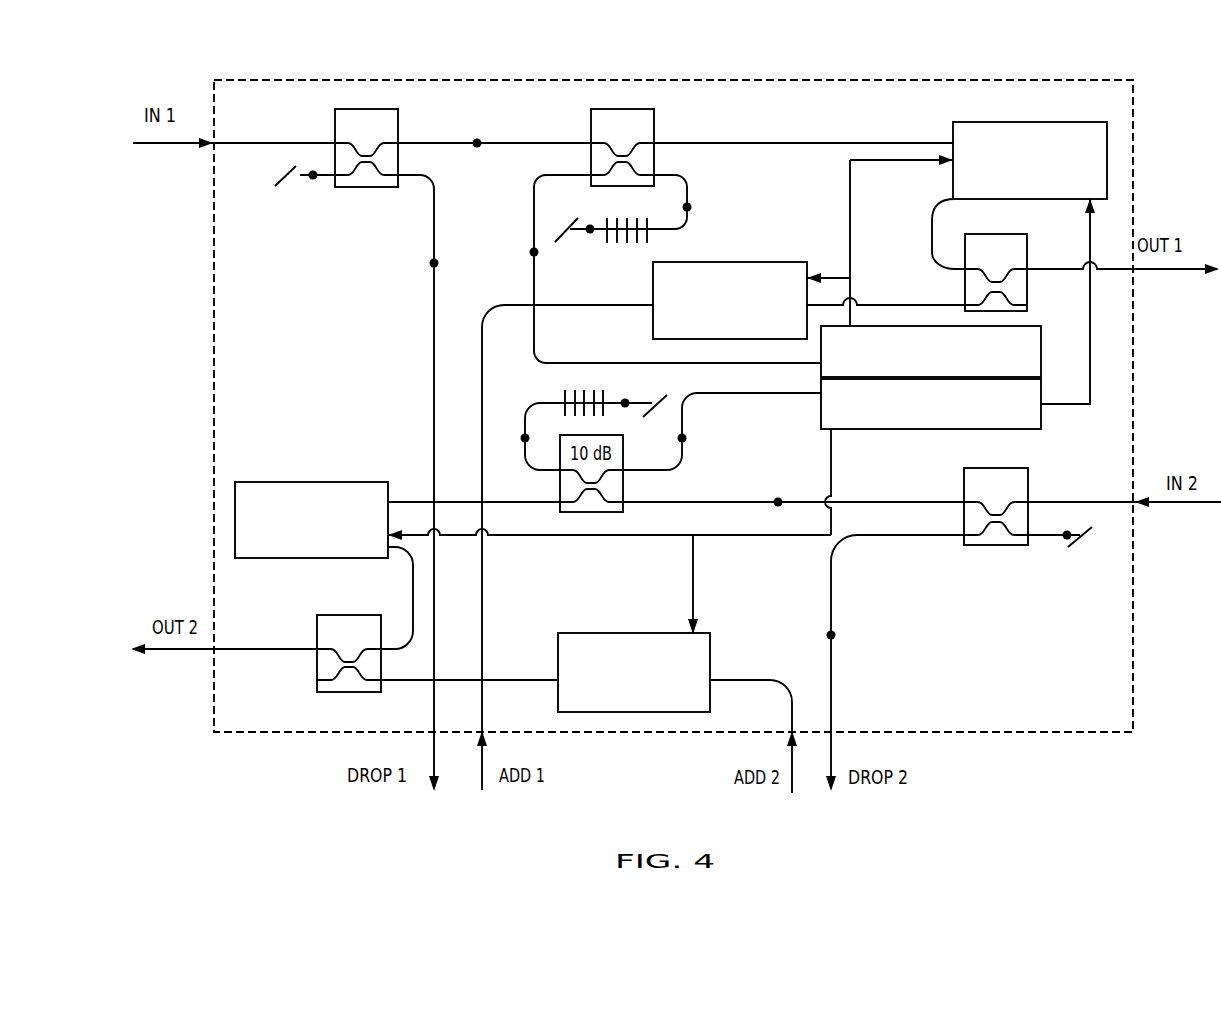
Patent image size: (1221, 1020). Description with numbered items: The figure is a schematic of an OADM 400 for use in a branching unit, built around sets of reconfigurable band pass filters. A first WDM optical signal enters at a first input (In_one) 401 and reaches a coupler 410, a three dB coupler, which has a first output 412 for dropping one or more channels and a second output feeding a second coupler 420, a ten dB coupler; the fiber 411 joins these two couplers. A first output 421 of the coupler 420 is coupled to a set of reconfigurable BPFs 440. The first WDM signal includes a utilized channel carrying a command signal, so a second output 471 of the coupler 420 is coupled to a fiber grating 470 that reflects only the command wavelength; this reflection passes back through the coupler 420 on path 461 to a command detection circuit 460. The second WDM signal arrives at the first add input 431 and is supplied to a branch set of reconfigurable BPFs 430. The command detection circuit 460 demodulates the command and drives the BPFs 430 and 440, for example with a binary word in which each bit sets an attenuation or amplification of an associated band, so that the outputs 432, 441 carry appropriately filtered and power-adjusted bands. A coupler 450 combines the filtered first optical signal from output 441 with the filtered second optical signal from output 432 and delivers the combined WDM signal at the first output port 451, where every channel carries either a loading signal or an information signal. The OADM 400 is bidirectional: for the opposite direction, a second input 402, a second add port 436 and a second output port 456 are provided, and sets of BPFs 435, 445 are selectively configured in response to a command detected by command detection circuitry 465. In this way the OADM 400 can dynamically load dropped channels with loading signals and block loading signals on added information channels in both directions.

The OADM 400 is at (282, 69).
The first input (In_1) 401 is at (258, 141).
The second input (In_2) 402 is at (1095, 500).
The coupler 410 is at (357, 188).
The optical path between couplers 411 is at (440, 141).
The first output 412 is at (432, 213).
The second coupler 420 is at (592, 130).
The first output 421 is at (682, 142).
The branch set of reconfigurable BPFs 430 is at (757, 262).
The input (Add_1) 431 is at (482, 790).
The output 432 is at (867, 305).
The set of BPFs 435 is at (636, 632).
The Add_2 436 is at (752, 680).
The set of reconfigurable BPFs 440 is at (952, 128).
The output 441 is at (932, 225).
The set of BPFs 445 is at (307, 481).
The coupler 450 is at (1027, 242).
The first output port (Out_1) 451 is at (1107, 264).
The Out_2 456 is at (283, 648).
The command detection circuit 460 is at (1037, 324).
The path 461 is at (532, 183).
The command detection circuitry 465 is at (862, 430).
The fiber grating 470 is at (612, 257).
The second output 471 is at (683, 178).